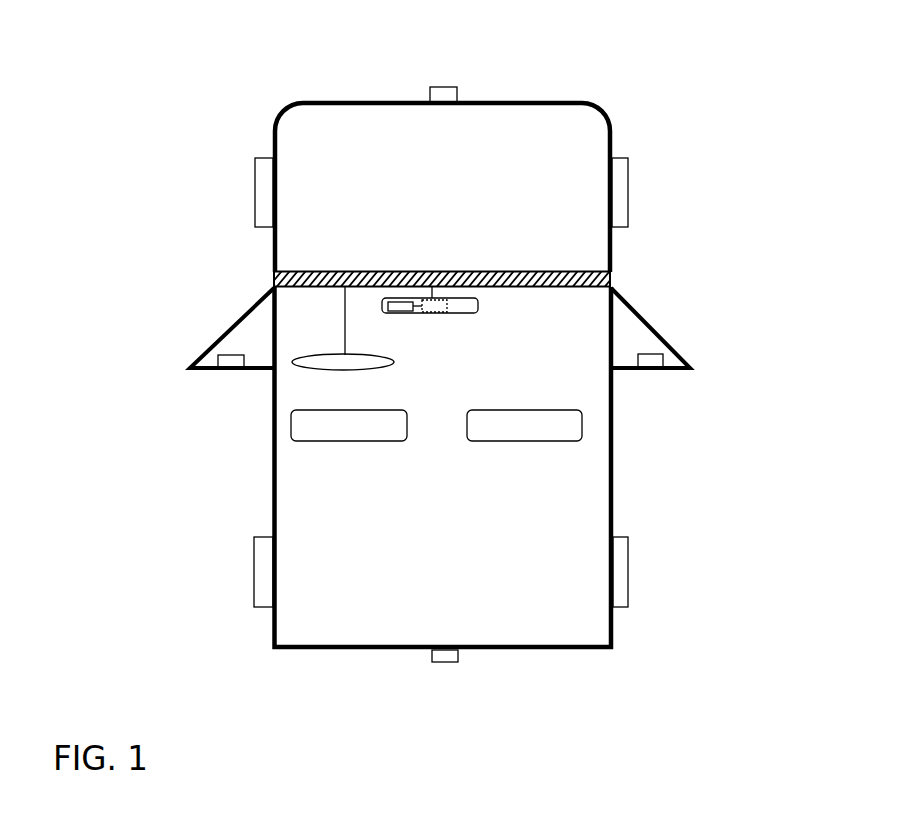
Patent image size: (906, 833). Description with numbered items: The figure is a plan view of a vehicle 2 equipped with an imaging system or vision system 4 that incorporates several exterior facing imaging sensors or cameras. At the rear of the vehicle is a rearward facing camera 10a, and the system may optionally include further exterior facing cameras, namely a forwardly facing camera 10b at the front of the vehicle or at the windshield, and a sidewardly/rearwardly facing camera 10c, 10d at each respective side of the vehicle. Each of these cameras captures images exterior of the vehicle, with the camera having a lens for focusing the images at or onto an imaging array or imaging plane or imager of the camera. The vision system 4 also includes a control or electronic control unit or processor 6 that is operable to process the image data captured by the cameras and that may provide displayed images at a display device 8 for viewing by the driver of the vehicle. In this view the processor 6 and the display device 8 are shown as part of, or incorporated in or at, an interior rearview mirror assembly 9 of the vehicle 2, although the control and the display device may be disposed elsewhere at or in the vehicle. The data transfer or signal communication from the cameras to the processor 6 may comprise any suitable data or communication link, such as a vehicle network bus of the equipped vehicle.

The vehicle 2 is at (200, 115).
The vision system 4 is at (397, 677).
The processor 6 is at (442, 307).
The display device 8 is at (403, 305).
The interior rearview mirror assembly 9 is at (478, 303).
The rearward facing camera 10a is at (447, 660).
The forwardly facing camera 10b is at (440, 90).
The sidewardly/rearwardly facing camera 10c is at (227, 362).
The sidewardly/rearwardly facing camera 10d is at (652, 360).